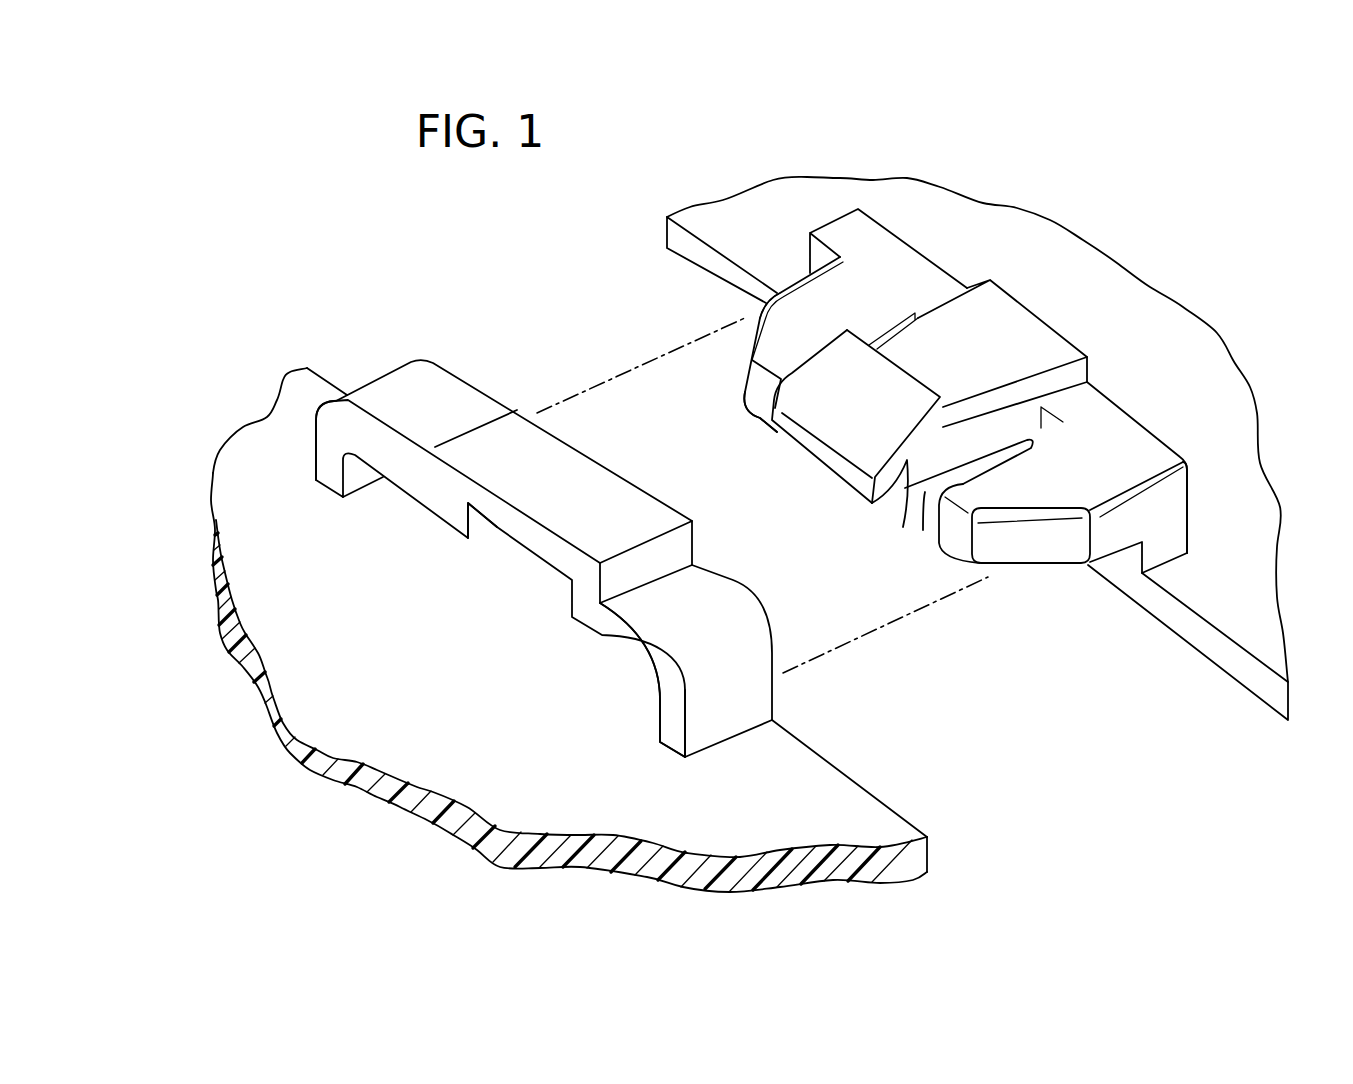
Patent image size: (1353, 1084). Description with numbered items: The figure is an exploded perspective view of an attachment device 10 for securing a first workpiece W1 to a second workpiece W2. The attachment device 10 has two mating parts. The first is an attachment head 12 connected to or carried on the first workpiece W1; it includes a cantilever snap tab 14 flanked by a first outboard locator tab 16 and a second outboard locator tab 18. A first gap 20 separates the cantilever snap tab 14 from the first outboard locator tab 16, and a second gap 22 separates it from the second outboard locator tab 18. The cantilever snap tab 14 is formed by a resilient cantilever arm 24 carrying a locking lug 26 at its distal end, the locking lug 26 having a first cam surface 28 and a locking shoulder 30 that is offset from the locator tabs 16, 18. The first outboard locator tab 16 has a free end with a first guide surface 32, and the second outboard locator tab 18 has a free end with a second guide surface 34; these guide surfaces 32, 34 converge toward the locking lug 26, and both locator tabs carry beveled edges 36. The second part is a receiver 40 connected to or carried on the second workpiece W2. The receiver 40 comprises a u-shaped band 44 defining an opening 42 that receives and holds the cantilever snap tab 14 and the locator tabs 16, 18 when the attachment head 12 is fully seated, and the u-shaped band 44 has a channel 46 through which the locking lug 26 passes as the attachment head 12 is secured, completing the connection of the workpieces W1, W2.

The attachment device 10 is at (470, 300).
The attachment head 12 is at (1108, 298).
The cantilever snap tab 14 is at (918, 490).
The first outboard locator tab 16 is at (797, 318).
The second outboard locator tab 18 is at (1030, 488).
The first gap 20 is at (774, 407).
The second gap 22 is at (948, 482).
The resilient cantilever arm 24 is at (983, 343).
The locking lug 26 is at (900, 495).
The first cam surface 28 is at (847, 415).
The locking shoulder 30 is at (1023, 400).
The first guide surface 32 is at (750, 357).
The second guide surface 34 is at (1037, 543).
The beveled edges 36 is at (755, 333).
The receiver 40 is at (340, 568).
The opening 42 is at (357, 473).
The u-shaped band 44 is at (660, 612).
The channel 46 is at (518, 543).
The first workpiece W1 is at (977, 227).
The second workpiece W2 is at (417, 727).